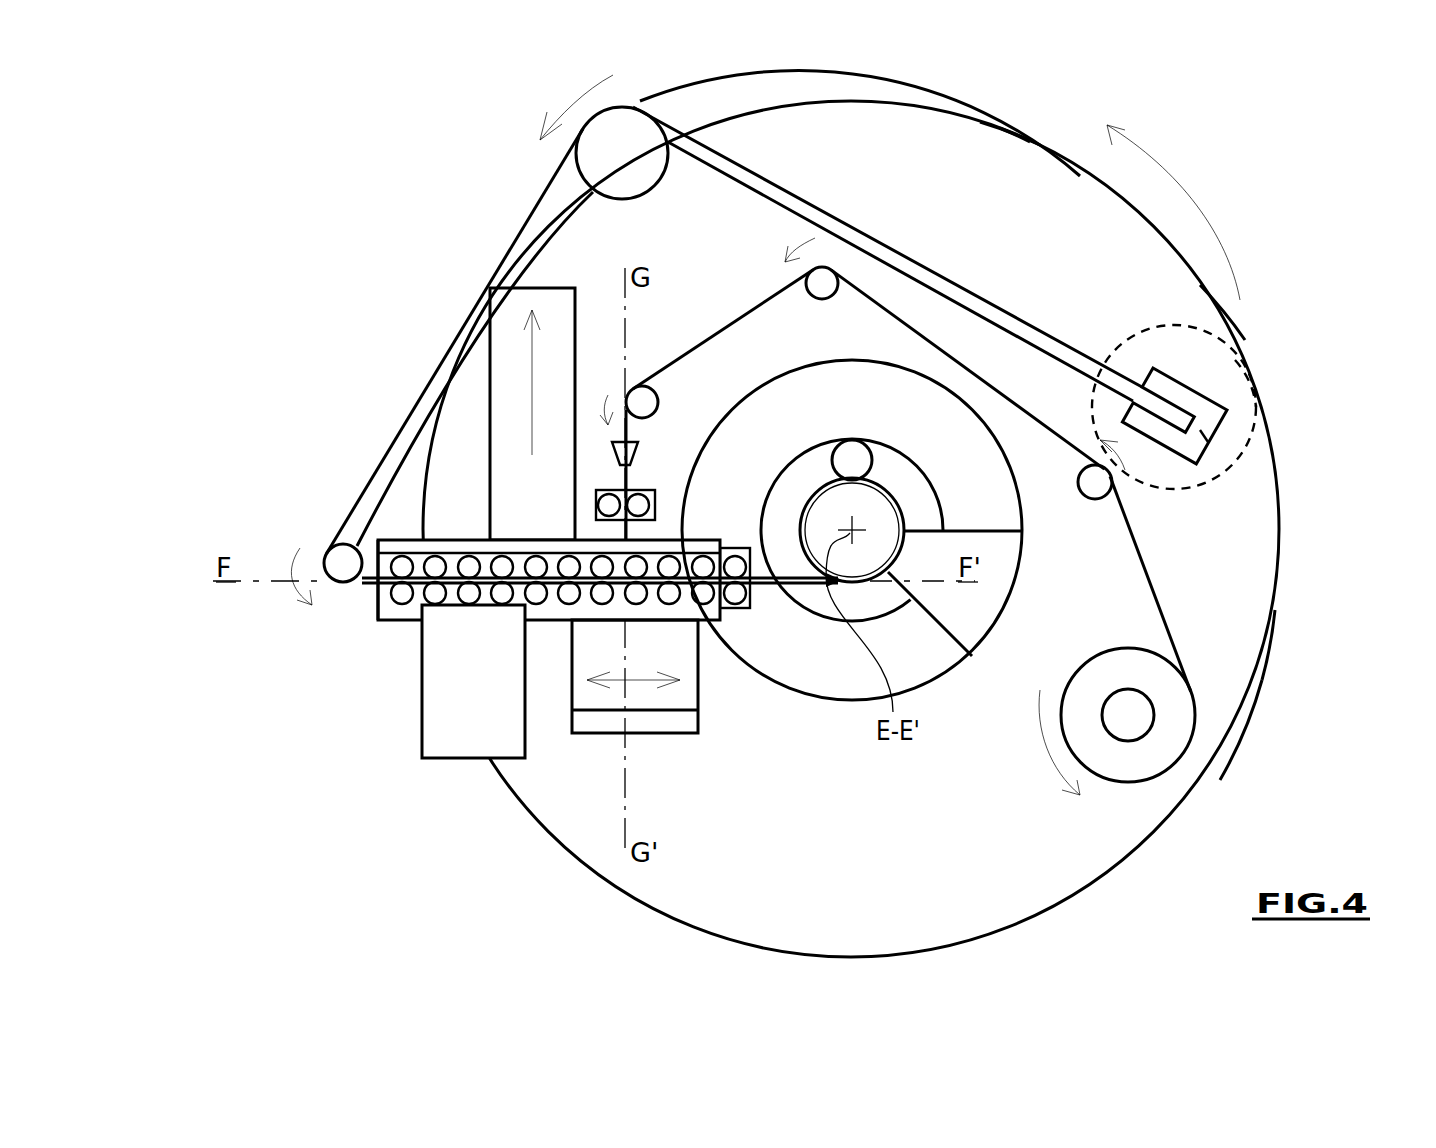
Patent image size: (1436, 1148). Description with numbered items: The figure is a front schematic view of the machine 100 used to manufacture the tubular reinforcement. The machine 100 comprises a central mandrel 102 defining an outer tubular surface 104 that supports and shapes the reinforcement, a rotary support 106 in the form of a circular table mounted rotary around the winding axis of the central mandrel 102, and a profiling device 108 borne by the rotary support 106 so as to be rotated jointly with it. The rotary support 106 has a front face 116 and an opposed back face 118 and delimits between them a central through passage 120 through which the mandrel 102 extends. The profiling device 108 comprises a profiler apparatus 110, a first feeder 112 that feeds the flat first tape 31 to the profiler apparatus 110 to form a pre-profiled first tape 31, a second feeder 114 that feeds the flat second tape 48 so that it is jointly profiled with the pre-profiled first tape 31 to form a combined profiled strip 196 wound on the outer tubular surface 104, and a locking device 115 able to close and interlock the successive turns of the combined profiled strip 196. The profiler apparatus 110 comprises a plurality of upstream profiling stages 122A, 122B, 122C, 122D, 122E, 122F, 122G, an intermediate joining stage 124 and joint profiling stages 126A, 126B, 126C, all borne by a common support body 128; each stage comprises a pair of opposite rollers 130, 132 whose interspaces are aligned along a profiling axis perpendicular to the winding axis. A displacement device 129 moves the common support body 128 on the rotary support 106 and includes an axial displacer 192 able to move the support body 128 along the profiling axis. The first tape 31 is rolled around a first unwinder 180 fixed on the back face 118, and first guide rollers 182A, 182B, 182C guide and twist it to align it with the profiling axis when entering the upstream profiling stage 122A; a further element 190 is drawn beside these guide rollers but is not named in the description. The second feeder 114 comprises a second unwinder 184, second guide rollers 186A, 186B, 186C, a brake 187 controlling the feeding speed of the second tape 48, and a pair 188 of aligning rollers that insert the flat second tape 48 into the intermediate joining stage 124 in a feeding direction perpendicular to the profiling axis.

The machine 100 is at (1215, 96).
The central mandrel 102 is at (903, 512).
The outer tubular surface 104 is at (877, 527).
The rotary support 106 is at (860, 101).
The profiling device 108 is at (610, 775).
The profiler apparatus 110 is at (505, 740).
The first feeder 112 is at (1240, 308).
The second feeder 114 is at (1262, 742).
The locking device 115 is at (874, 432).
The front face 116 is at (1004, 128).
The back face 118 is at (1013, 148).
The central through passage 120 is at (842, 700).
The upstream profiling stage 122A is at (400, 594).
The upstream profiling stage 122B is at (437, 600).
The upstream profiling stage 122C is at (470, 603).
The upstream profiling stage 122D is at (504, 604).
The upstream profiling stage 122E is at (534, 566).
The upstream profiling stage 122F is at (568, 556).
The upstream profiling stage 122G is at (600, 556).
The intermediate joining stage 124 is at (634, 620).
The joint profiling stage 126A is at (648, 604).
The joint profiling stage 126B is at (672, 604).
The joint profiling stage 126C is at (735, 556).
The common support body 128 is at (378, 541).
The displacement device 129 is at (548, 660).
The roller 130 is at (434, 548).
The roller 132 is at (395, 606).
The first unwinder 180 is at (1242, 362).
The first guide roller 182A is at (1223, 442).
The first guide roller 182B is at (621, 128).
The first guide roller 182C is at (340, 556).
The second unwinder 184 is at (1128, 768).
The second guide roller 186A is at (1093, 483).
The second guide roller 186B is at (828, 268).
The second guide roller 186C is at (648, 388).
The brake 187 is at (497, 384).
The pair of aligning rollers 188 is at (638, 494).
The guide block 190 is at (513, 287).
The axial displacer 192 is at (703, 604).
The combined profiled strip 196 is at (768, 585).
The first tape 31 is at (985, 302).
The second tape 48 is at (1250, 655).